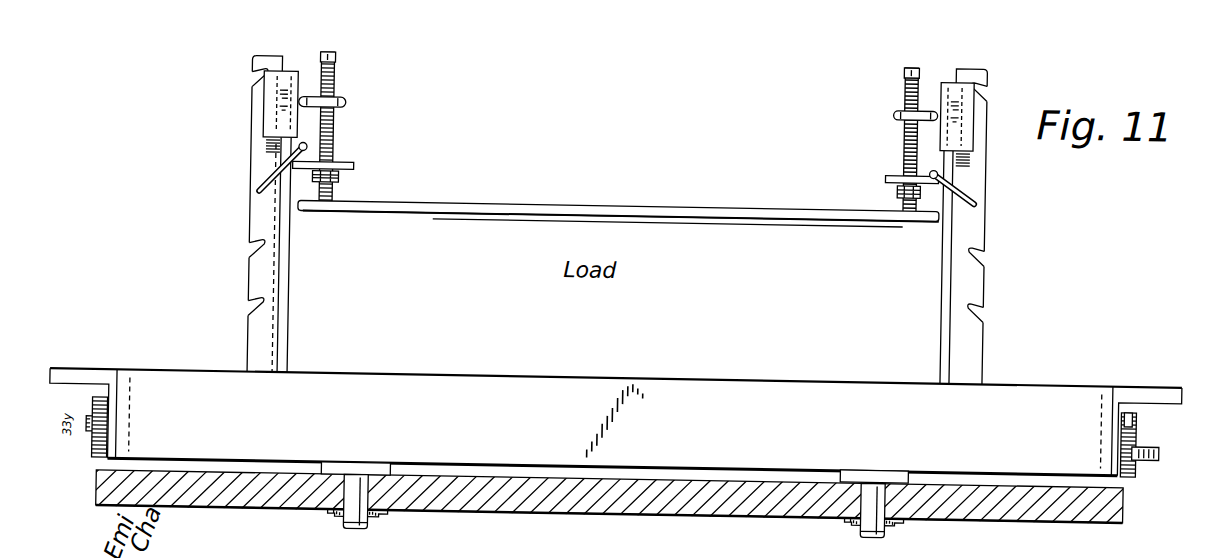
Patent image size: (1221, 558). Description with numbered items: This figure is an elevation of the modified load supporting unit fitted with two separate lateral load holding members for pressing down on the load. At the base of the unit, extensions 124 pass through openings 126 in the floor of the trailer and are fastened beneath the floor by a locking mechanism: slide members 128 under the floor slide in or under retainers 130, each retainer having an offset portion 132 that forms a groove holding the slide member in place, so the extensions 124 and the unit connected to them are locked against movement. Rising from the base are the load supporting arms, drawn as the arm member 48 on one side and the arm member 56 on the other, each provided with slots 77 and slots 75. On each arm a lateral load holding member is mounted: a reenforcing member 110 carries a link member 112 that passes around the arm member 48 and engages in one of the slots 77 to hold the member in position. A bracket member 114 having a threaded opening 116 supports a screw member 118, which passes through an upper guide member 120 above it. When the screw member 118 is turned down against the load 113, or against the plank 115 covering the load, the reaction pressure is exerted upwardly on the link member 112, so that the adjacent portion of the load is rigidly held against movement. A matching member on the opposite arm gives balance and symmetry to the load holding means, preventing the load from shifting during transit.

The arm member 48 is at (266, 284).
The right upright post 56 is at (971, 289).
The slots 77 is at (245, 263).
The right post notches 75 is at (978, 258).
The reenforcing member 110 is at (268, 119).
The link member 112 is at (266, 181).
The bracket member 114 is at (340, 167).
The threaded opening 116 is at (334, 182).
The screw member 118 is at (329, 133).
The upper guide member 120 is at (330, 106).
The plank 115 is at (506, 208).
The load 113 is at (670, 231).
The extensions 124 is at (360, 487).
The openings 126 is at (377, 499).
The slide members 128 is at (350, 528).
The retainers 130 is at (326, 519).
The offset portion 132 is at (926, 528).